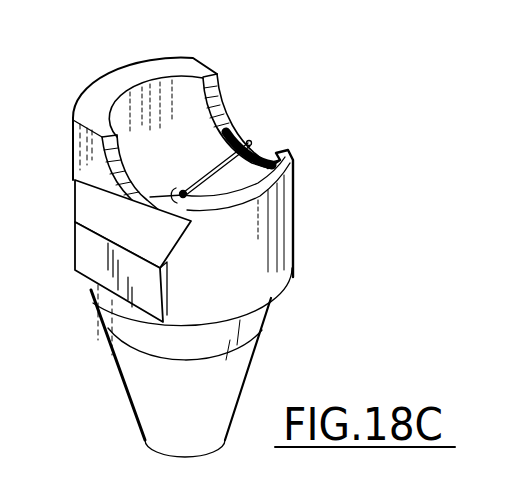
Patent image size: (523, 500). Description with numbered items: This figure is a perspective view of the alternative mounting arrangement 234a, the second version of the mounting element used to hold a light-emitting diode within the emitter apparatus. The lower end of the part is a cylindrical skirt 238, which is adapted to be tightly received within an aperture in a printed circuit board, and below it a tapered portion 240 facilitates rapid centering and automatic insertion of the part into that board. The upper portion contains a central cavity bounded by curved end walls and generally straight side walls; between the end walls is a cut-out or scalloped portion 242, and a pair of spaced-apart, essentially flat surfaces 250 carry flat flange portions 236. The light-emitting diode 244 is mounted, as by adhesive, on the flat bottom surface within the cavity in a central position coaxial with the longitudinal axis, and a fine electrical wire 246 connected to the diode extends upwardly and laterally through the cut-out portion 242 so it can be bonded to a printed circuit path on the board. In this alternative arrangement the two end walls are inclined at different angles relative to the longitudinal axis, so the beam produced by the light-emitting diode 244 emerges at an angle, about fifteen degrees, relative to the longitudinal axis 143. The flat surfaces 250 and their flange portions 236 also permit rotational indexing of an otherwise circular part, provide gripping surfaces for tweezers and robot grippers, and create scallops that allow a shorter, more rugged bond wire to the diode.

The bore 143 is at (170, 101).
The alternative mounting arrangement 234a is at (247, 69).
The flat flange portions 236 is at (80, 152).
The cylindrical skirt 238 is at (102, 311).
The tapered portion 240 is at (132, 392).
The cut-out or scalloped portion 242 is at (254, 118).
The light-emitting diode 244 is at (170, 189).
The fine electrical wire 246 is at (254, 142).
The flat surfaces 250 is at (95, 217).